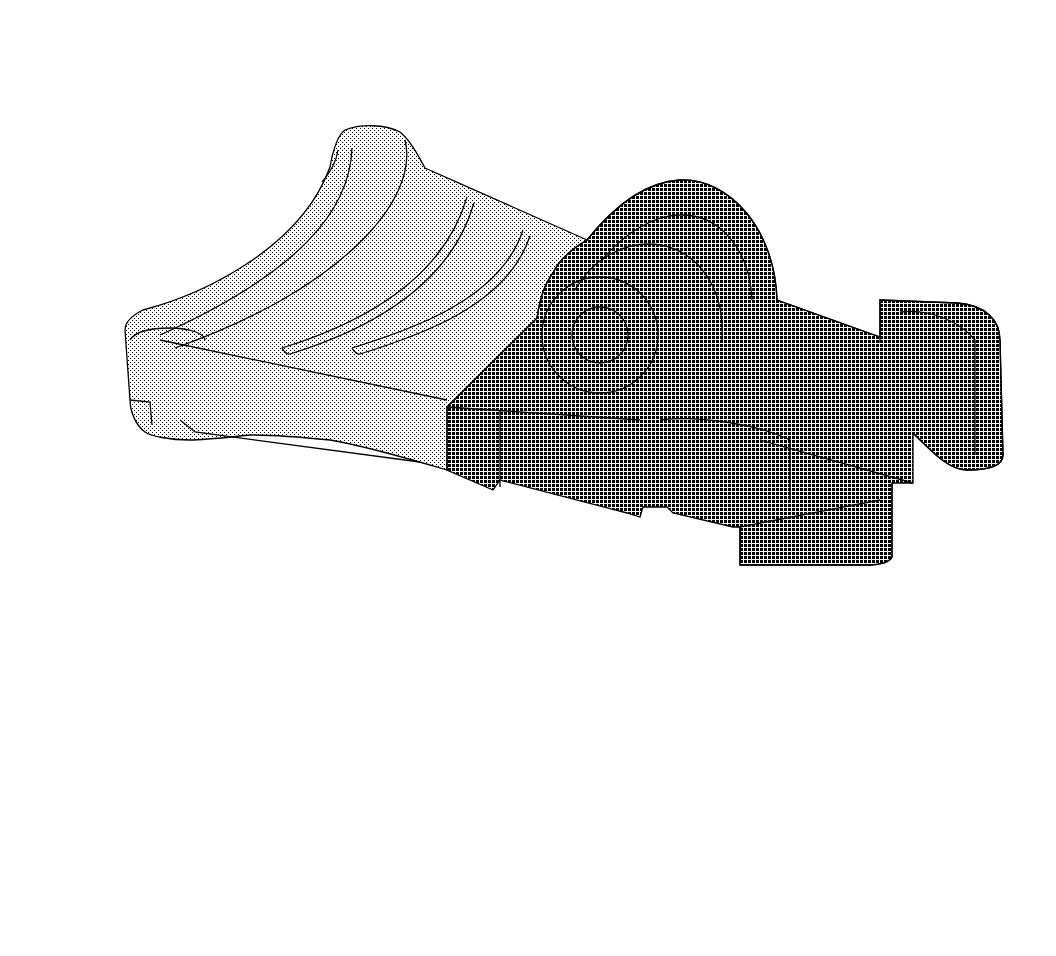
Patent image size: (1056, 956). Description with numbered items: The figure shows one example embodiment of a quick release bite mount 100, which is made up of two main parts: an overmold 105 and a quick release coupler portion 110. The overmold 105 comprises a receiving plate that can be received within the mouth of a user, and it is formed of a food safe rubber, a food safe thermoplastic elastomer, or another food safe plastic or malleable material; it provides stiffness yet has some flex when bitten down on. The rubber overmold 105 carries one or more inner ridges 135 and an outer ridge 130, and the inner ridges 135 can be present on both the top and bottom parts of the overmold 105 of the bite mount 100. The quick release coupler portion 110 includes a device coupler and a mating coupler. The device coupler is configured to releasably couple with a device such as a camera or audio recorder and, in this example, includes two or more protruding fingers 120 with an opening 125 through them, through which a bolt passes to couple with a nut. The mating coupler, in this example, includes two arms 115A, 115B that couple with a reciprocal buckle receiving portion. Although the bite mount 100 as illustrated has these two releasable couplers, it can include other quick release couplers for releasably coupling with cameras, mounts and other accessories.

The bite mount 100 is at (833, 218).
The overmold 105 is at (443, 173).
The quick release coupler portion 110 is at (813, 310).
The arm 115A is at (953, 300).
The arm 115B is at (827, 567).
The protruding fingers 120 is at (708, 187).
The opening 125 is at (598, 365).
The outer ridge 130 is at (365, 125).
The inner ridges 135 is at (268, 343).